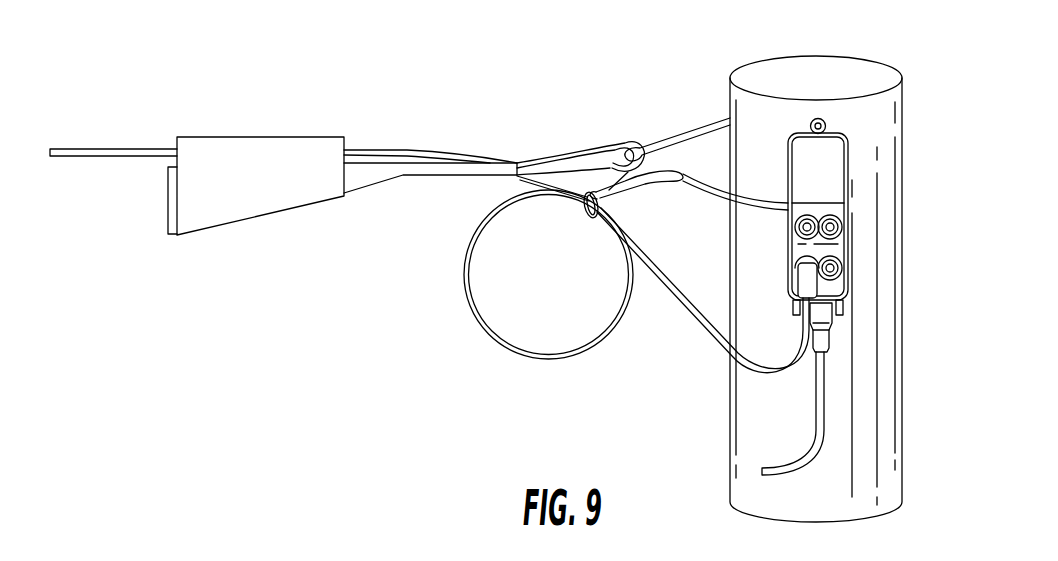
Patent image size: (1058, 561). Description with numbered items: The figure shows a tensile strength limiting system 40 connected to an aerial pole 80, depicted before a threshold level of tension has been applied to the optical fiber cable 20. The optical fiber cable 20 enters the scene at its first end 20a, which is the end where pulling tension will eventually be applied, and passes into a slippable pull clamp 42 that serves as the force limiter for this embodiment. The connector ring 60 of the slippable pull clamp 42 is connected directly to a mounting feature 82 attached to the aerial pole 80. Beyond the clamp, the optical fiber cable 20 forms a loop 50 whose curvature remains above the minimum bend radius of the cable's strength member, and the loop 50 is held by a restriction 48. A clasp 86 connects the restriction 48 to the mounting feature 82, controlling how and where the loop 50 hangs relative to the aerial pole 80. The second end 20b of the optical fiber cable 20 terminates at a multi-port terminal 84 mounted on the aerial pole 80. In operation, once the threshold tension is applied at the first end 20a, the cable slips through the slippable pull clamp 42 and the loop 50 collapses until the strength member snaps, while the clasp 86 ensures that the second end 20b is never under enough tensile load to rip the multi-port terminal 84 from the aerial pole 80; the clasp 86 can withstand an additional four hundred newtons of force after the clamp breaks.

The optical fiber cable 20 is at (383, 153).
The first end 20a is at (68, 149).
The second end 20b is at (808, 287).
The tensile strength limiting system 40 is at (392, 255).
The slippable pull clamp 42 is at (207, 217).
The restriction 48 is at (591, 218).
The loop 50 is at (515, 353).
The connector ring 60 is at (577, 157).
The aerial pole 80 is at (890, 368).
The mounting feature 82 is at (683, 132).
The multi-port terminal 84 is at (850, 172).
The clasp 86 is at (645, 197).